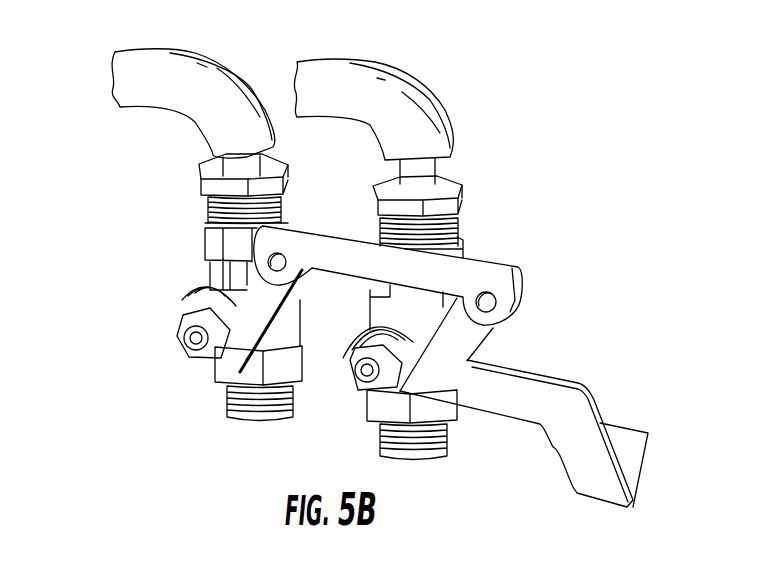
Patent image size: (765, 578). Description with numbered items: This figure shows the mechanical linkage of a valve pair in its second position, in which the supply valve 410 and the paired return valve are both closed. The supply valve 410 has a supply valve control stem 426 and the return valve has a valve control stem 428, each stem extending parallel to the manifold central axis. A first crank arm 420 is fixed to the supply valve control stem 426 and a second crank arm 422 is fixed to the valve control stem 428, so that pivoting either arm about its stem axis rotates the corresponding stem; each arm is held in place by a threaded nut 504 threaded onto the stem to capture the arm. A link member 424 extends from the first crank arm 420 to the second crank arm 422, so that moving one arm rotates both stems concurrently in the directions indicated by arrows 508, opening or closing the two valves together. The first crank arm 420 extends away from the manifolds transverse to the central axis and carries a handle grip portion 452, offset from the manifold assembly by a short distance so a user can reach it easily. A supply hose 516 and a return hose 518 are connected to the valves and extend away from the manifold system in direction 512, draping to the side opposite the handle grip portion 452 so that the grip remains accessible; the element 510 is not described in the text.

The supply valve 410 is at (254, 248).
The first crank arm 420 is at (478, 368).
The second crank arm 422 is at (246, 343).
The link member 424 is at (388, 270).
The supply valve control stem 426 is at (367, 377).
The valve control stem 428 is at (195, 332).
The handle grip portion 452 is at (637, 450).
The threaded nut 504 is at (353, 352).
The arrows 508 is at (487, 308).
The connecting rod 510 is at (269, 321).
The direction 512 is at (110, 87).
The supply hoses 516 is at (420, 78).
The return hoses 518 is at (213, 55).